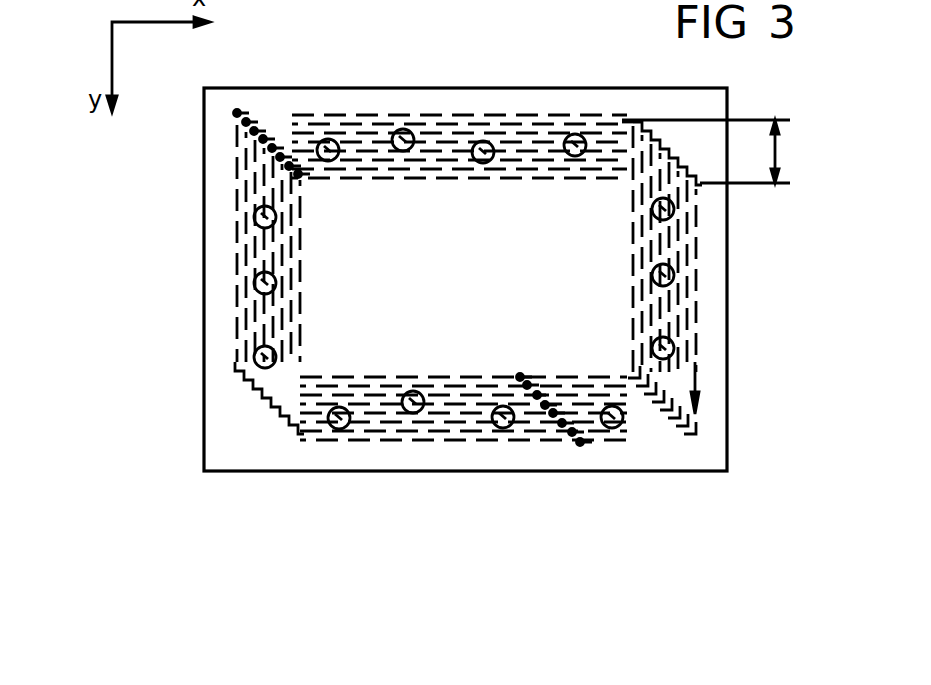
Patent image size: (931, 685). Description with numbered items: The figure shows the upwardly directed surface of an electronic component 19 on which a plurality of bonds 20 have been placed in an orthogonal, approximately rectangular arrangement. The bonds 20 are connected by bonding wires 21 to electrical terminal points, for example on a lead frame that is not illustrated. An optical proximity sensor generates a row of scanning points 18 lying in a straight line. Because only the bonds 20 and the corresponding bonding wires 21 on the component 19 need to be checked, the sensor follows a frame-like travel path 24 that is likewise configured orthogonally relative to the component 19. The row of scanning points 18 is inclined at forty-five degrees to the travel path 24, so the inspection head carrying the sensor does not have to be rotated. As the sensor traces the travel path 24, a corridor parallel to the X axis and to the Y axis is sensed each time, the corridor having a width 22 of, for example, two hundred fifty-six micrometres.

The row of scanning points 18 is at (298, 174).
The electronic component 19 is at (204, 411).
The bonds 20 is at (575, 140).
The bonding wires 21 is at (400, 137).
The width 22 is at (778, 152).
The travel path 24 is at (693, 358).